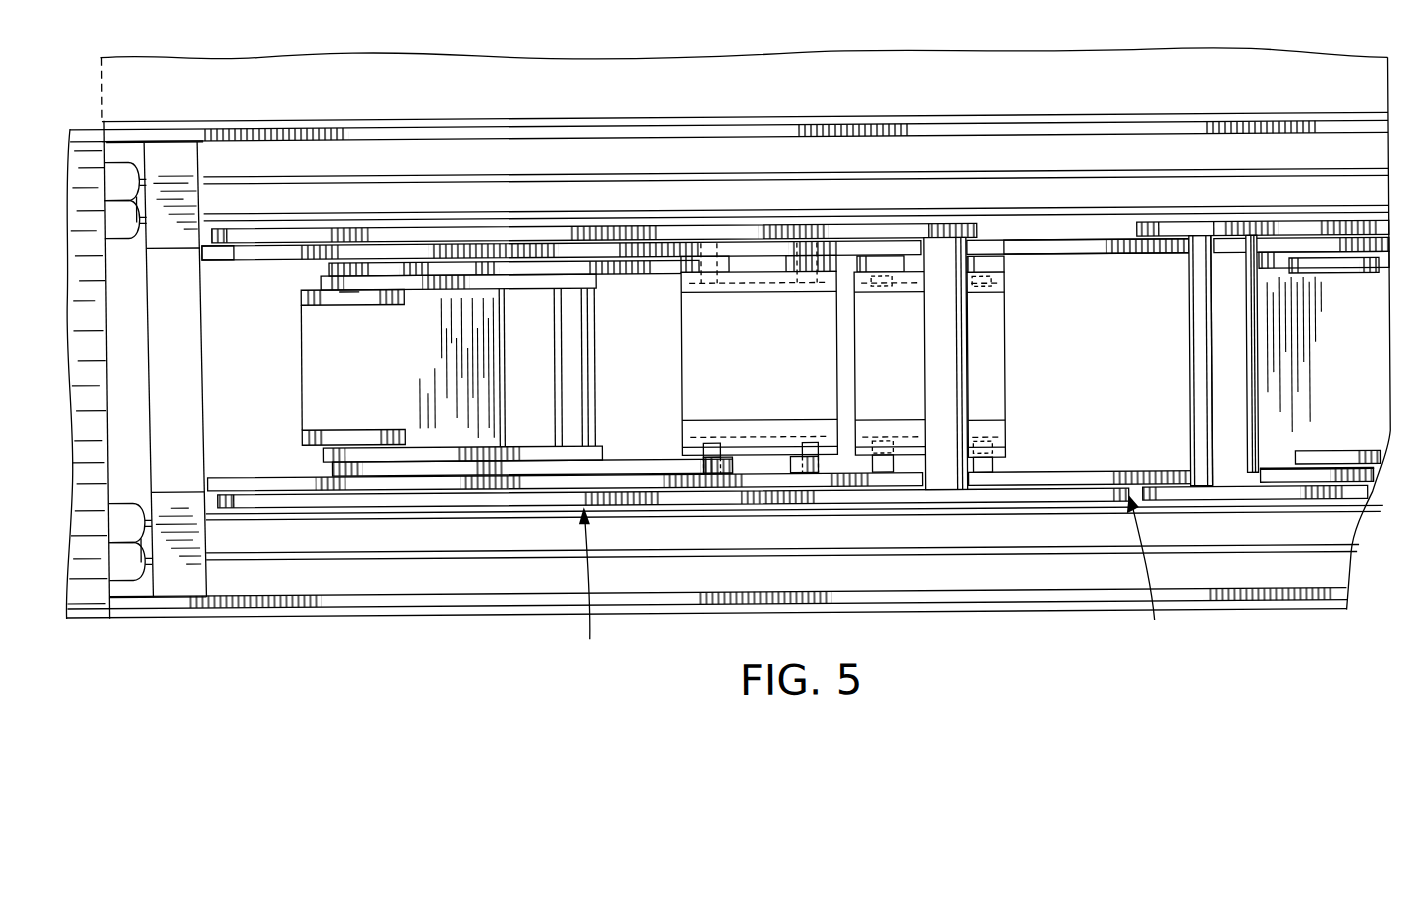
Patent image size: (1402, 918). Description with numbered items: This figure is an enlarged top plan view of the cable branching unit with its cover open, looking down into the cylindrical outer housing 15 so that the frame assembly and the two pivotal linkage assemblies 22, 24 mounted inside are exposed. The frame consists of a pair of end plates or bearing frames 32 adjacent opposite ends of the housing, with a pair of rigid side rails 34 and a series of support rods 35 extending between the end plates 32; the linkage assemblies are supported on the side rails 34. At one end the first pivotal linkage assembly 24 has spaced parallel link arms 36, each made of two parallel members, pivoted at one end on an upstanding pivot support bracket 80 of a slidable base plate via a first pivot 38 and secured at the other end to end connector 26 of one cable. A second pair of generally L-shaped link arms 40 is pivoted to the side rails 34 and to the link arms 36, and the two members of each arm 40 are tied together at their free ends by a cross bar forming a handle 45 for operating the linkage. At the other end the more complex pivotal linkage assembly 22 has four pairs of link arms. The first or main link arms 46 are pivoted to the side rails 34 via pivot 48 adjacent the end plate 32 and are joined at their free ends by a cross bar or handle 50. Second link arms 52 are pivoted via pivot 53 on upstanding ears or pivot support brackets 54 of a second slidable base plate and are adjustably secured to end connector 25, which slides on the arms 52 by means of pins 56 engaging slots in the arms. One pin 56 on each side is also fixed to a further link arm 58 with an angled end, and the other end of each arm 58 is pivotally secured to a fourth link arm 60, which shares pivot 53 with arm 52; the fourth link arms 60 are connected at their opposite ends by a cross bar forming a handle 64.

The cylindrical outer housing 15 is at (478, 605).
The pivotal linkage assembly 22 is at (589, 584).
The pivotal linkage assembly 24 is at (1144, 569).
The end connector 25 is at (697, 385).
The end connector 26 is at (997, 396).
The end plate 32 is at (185, 378).
The side rail 34 is at (1197, 382).
The support rod 35 is at (779, 191).
The link arm 36 is at (1065, 258).
The first pivot 38 is at (1337, 465).
The L-shaped link arm 40 is at (1280, 230).
The handle 45 is at (1193, 340).
The first link arm 46 is at (662, 238).
The pivot 48 is at (236, 258).
The handle 50 is at (957, 341).
The second link arm 52 is at (458, 257).
The pivot 53 is at (348, 299).
The pivot support bracket 54 is at (375, 307).
The pin 56 is at (808, 446).
The link arm 58 is at (623, 270).
The fourth link arm 60 is at (520, 286).
The handle 64 is at (587, 371).
The pivot support bracket 80 is at (1367, 280).